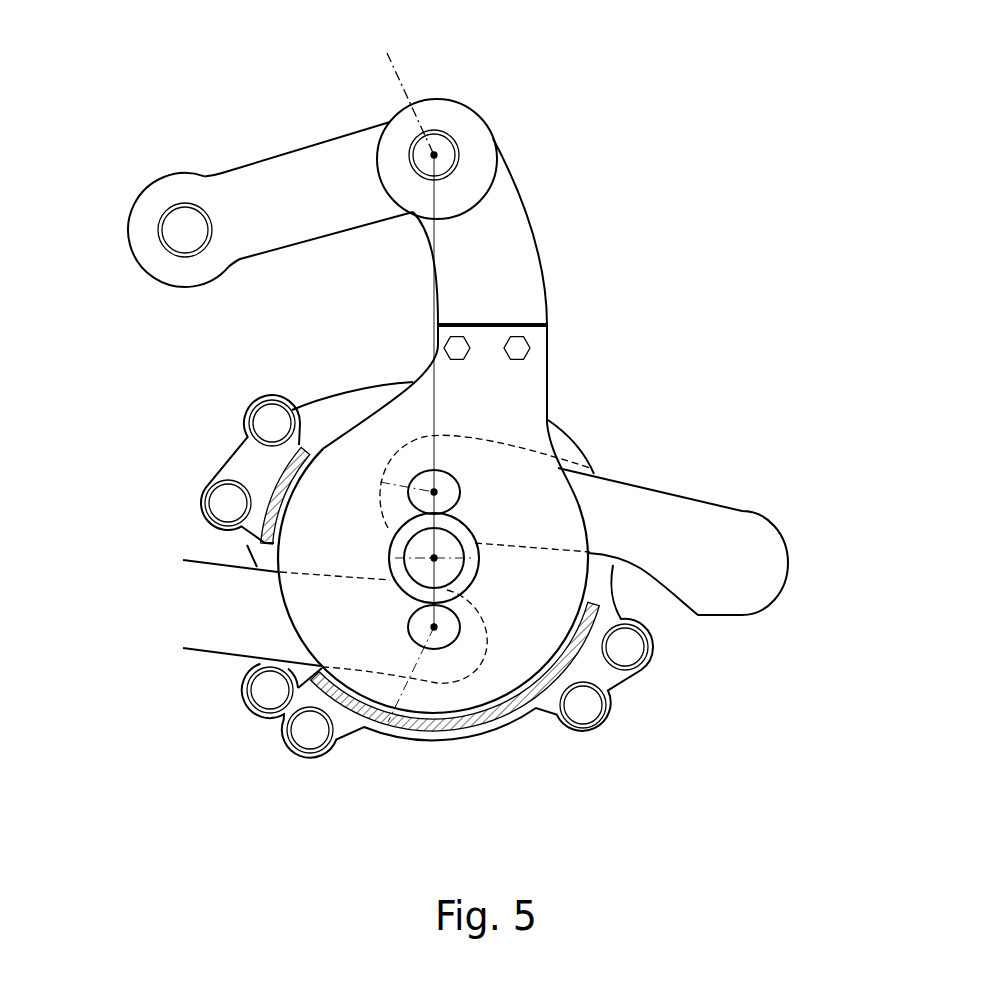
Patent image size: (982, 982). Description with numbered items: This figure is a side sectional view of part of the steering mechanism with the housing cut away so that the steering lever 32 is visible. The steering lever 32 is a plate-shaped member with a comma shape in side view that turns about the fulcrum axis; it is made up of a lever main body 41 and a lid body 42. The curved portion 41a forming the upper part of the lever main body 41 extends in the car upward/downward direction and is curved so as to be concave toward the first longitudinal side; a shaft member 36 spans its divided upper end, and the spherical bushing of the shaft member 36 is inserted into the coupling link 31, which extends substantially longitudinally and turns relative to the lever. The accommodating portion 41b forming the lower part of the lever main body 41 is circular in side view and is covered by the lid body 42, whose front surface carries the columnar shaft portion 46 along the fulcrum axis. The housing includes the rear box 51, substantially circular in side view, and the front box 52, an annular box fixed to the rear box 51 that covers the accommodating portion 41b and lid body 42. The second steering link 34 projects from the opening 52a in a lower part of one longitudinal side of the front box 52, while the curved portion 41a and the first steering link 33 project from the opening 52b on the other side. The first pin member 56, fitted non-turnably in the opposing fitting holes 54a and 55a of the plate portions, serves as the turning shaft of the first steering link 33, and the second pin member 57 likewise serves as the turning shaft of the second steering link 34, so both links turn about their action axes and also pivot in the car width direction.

The coupling link 31 is at (284, 170).
The steering lever 32 is at (585, 165).
The first steering link 33 is at (693, 505).
The second steering link 34 is at (208, 645).
The shaft member 36 is at (447, 149).
The lever main body 41 is at (562, 221).
The curved portion 41a is at (545, 270).
The accommodating portion 41b is at (560, 442).
The lid body 42 is at (540, 385).
The shaft portion 46 is at (455, 568).
The rear box 51 is at (348, 412).
The front box 52 is at (547, 707).
The opening 52a is at (247, 548).
The opening 52b is at (303, 408).
The fitting hole 54a is at (441, 473).
The fitting hole 55a is at (443, 638).
The first pin member 56 is at (462, 492).
The second pin member 57 is at (420, 627).